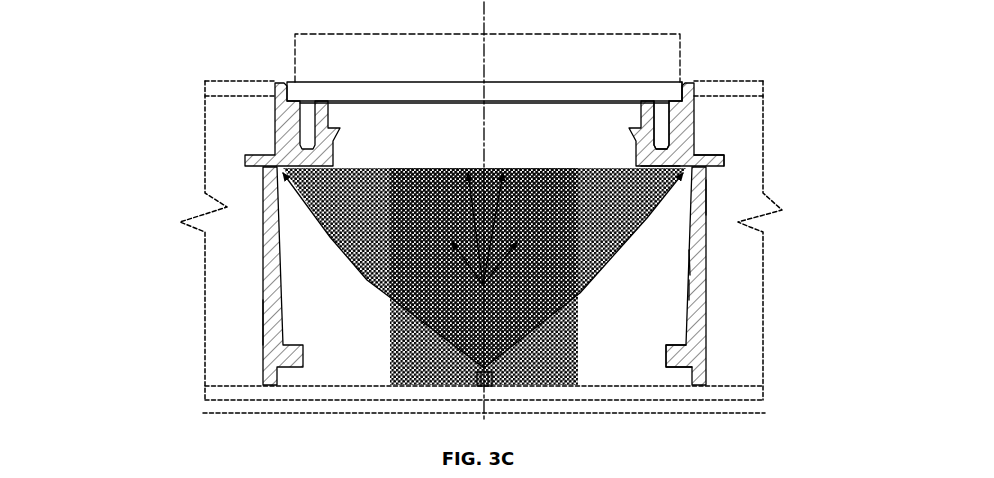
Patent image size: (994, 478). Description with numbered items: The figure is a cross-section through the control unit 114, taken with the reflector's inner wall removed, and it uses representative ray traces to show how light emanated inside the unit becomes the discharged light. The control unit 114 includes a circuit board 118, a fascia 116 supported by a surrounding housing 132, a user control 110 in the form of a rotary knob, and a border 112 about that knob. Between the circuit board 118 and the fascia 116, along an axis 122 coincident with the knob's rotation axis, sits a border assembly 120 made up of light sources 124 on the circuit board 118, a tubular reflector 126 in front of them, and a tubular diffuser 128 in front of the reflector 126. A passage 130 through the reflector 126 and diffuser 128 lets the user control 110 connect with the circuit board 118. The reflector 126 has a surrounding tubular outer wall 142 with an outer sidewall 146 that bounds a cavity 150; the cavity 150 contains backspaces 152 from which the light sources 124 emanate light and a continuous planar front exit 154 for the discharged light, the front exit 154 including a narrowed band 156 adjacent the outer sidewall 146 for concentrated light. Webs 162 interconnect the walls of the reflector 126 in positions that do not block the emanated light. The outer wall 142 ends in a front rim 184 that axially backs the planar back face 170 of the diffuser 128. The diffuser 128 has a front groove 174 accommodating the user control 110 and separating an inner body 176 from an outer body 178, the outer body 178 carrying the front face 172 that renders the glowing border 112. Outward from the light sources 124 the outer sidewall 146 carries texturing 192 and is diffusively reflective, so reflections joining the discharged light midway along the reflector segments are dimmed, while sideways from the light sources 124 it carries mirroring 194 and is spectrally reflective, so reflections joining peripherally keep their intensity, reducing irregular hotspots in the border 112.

The user control 110 is at (475, 51).
The front face 172 is at (181, 102).
The border 112 is at (181, 102).
The fascia 116 is at (424, 240).
The diffuser 128 is at (275, 82).
The control unit 114 is at (204, 147).
The border assembly 120 is at (185, 276).
The reflector 126 is at (263, 322).
The light sources 124 is at (475, 341).
The circuit board 118 is at (203, 386).
The housing 132 is at (203, 404).
The axis 122 is at (480, 33).
The passage 130 is at (440, 186).
The front exit 154 is at (647, 176).
The narrowed band 156 is at (665, 174).
The texturing 192 is at (548, 288).
The mirroring 194 is at (650, 288).
The inner body 176 is at (688, 82).
The front groove 174 is at (670, 126).
The outer body 178 is at (756, 95).
The front rim 184 is at (712, 157).
The back face 170 is at (775, 250).
The outer wall 142 is at (707, 195).
The outer sidewall 146 is at (690, 270).
The cavity 150 is at (673, 292).
The backspaces 152 is at (503, 377).
The webs 162 is at (680, 350).